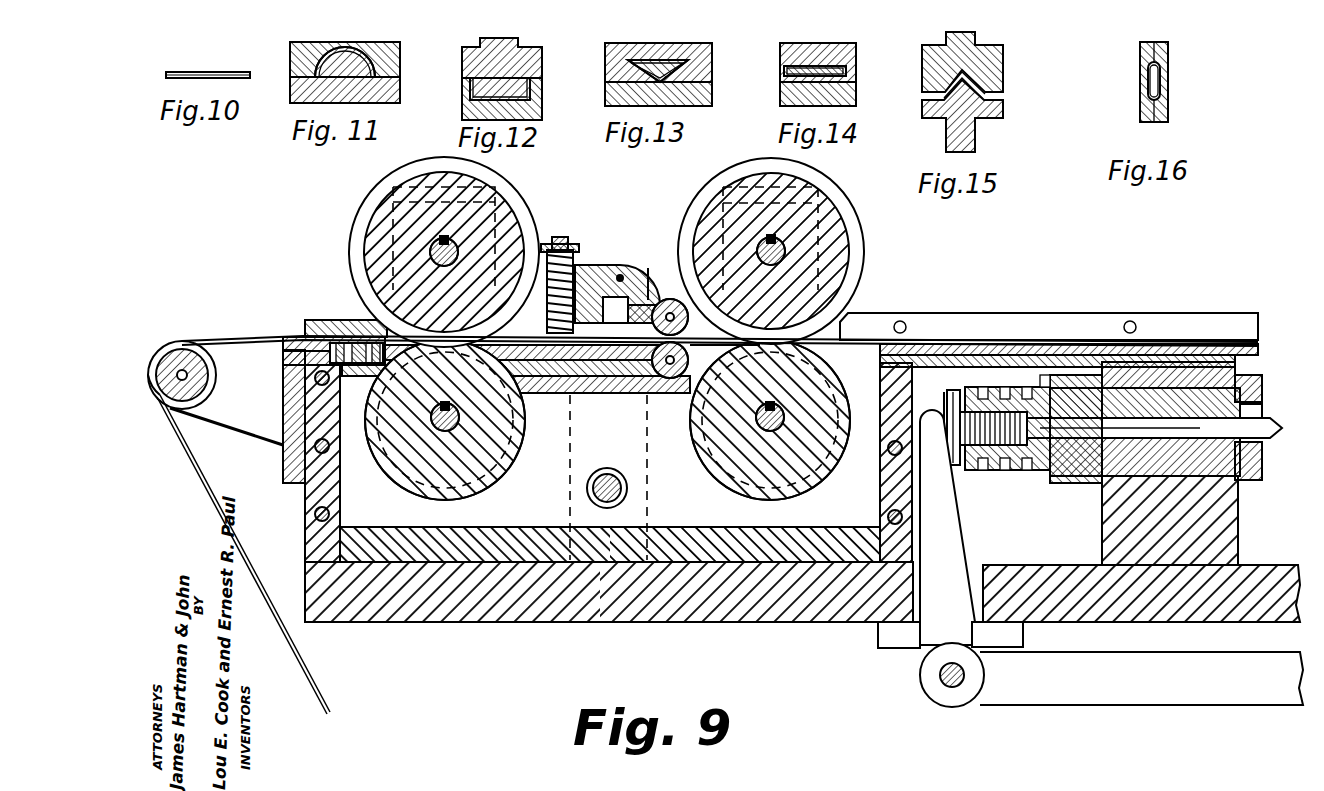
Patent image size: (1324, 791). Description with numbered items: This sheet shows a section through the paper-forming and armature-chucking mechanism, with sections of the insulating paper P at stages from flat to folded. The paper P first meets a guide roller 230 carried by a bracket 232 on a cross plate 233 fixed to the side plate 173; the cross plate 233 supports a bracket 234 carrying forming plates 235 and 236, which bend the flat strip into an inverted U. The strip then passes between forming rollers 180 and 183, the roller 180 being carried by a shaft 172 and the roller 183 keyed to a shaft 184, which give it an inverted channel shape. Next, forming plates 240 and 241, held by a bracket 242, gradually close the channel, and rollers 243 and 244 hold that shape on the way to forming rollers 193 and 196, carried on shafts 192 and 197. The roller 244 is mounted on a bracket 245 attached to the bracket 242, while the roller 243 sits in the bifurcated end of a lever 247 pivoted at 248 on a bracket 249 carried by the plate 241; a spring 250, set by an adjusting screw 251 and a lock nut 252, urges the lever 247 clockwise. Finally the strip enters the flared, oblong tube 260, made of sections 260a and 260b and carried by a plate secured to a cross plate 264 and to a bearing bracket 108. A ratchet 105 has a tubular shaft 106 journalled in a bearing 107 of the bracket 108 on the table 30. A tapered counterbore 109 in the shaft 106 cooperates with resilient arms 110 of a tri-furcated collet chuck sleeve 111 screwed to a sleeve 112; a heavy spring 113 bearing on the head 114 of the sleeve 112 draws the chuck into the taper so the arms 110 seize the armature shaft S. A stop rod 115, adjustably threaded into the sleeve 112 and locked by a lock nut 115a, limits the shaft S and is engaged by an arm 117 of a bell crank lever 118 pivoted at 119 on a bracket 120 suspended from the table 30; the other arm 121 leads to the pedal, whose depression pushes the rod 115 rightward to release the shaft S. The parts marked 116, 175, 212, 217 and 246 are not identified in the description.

In FIG. 10, the paper P is at (172, 72).
In FIG. 11, the paper P is at (347, 52).
In FIG. 12, the paper P is at (470, 90).
In FIG. 13, the paper P is at (628, 66).
In FIG. 14, the paper P is at (784, 70).
In FIG. 15, the paper P is at (940, 96).
In FIG. 16, the paper P is at (1148, 90).
In FIG. 9, the paper P is at (182, 341).
In FIG. 9, the shaft of the armature assembly S is at (1282, 428).
In FIG. 9, the table 30 is at (508, 623).
In FIG. 9, the ratchet 105 is at (1070, 482).
In FIG. 9, the tubular shaft 106 is at (1222, 375).
In FIG. 9, the bearing 107 is at (1168, 365).
In FIG. 9, the bearing bracket 108 is at (1238, 516).
In FIG. 9, the tapered counterbore 109 is at (1262, 384).
In FIG. 9, the resilient arms 110 is at (1264, 410).
In FIG. 9, the tri-furcated collet chuck sleeve 111 is at (1300, 456).
In FIG. 9, the sleeve 112 is at (1062, 478).
In FIG. 9, the heavy spring 113 is at (1018, 472).
In FIG. 9, the head 114 is at (988, 474).
In FIG. 9, the stop rod 115 is at (1038, 405).
In FIG. 9, the lock nut 115a is at (965, 390).
In FIG. 9, the plate 116 is at (950, 392).
In FIG. 9, the arm 117 is at (956, 540).
In FIG. 9, the bell crank lever 118 is at (920, 680).
In FIG. 9, the pivot 119 is at (942, 686).
In FIG. 9, the bracket 120 is at (886, 648).
In FIG. 9, the arm 121 is at (1262, 705).
In FIG. 9, the shaft 172 is at (452, 428).
In FIG. 9, the plate 173 is at (365, 510).
In FIG. 9, the base plate 175 is at (378, 560).
In FIG. 12, the forming roller 180 is at (462, 106).
In FIG. 9, the forming roller 180 is at (520, 448).
In FIG. 12, the forming roller 183 is at (462, 72).
In FIG. 9, the forming roller 183 is at (392, 188).
In FIG. 9, the shaft 184 is at (450, 264).
In FIG. 9, the shaft 192 is at (760, 430).
In FIG. 15, the forming roller 193 is at (922, 114).
In FIG. 9, the forming roller 193 is at (795, 490).
In FIG. 15, the forming roller 196 is at (932, 76).
In FIG. 9, the forming roller 196 is at (862, 252).
In FIG. 9, the shaft 197 is at (782, 255).
In FIG. 9, the bushing 212 is at (628, 490).
In FIG. 9, the shaft 217 is at (586, 488).
In FIG. 9, the guide roller 230 is at (158, 405).
In FIG. 9, the bracket 232 is at (275, 456).
In FIG. 9, the cross plate 233 is at (300, 508).
In FIG. 9, the bracket 234 is at (283, 366).
In FIG. 11, the forming plate 235 is at (290, 94).
In FIG. 9, the forming plate 235 is at (283, 358).
In FIG. 11, the forming plate 236 is at (290, 55).
In FIG. 9, the forming plate 236 is at (305, 322).
In FIG. 13, the forming plate 240 is at (605, 92).
In FIG. 14, the forming plate 240 is at (780, 92).
In FIG. 9, the forming plate 240 is at (594, 370).
In FIG. 13, the forming plate 241 is at (605, 58).
In FIG. 14, the forming plate 241 is at (780, 58).
In FIG. 9, the forming plate 241 is at (618, 312).
In FIG. 9, the bracket 242 is at (620, 378).
In FIG. 9, the roller 243 is at (670, 299).
In FIG. 9, the roller 244 is at (690, 368).
In FIG. 9, the bracket 245 is at (640, 390).
In FIG. 9, the guide 246 is at (740, 350).
In FIG. 9, the lever 247 is at (604, 265).
In FIG. 9, the pivot 248 is at (622, 275).
In FIG. 9, the bracket 249 is at (652, 274).
In FIG. 9, the spring 250 is at (580, 244).
In FIG. 9, the adjusting screw 251 is at (554, 248).
In FIG. 9, the lock nut 252 is at (562, 236).
In FIG. 16, the tube 260 is at (1168, 141).
In FIG. 16, the tube section 260a is at (1150, 62).
In FIG. 16, the tube section 260b is at (1162, 62).
In FIG. 9, the cross plate 264 is at (880, 376).